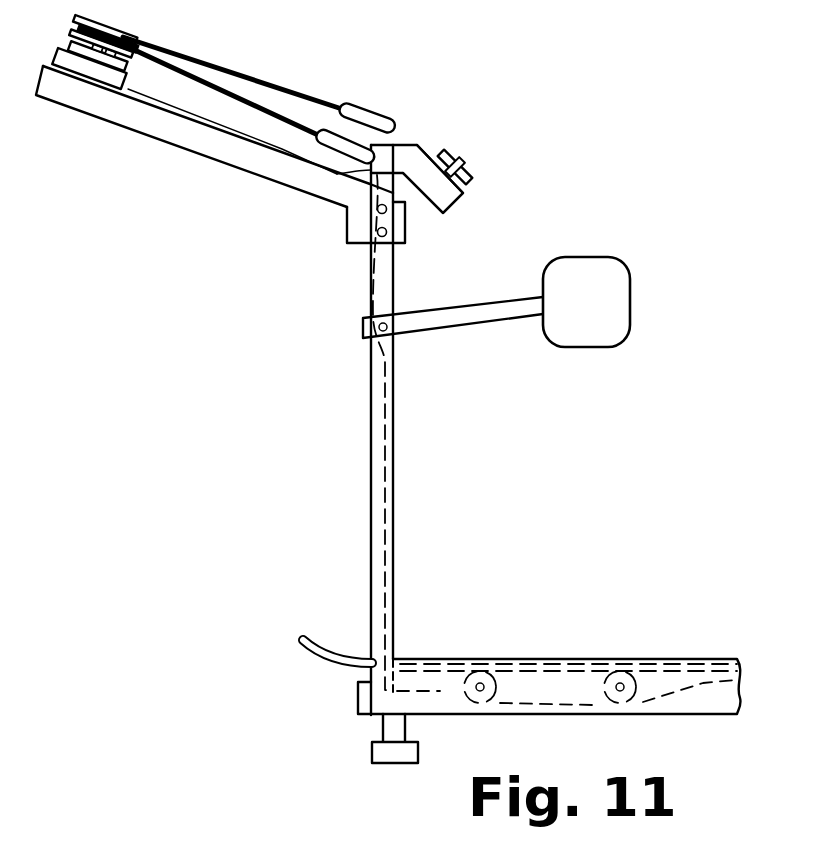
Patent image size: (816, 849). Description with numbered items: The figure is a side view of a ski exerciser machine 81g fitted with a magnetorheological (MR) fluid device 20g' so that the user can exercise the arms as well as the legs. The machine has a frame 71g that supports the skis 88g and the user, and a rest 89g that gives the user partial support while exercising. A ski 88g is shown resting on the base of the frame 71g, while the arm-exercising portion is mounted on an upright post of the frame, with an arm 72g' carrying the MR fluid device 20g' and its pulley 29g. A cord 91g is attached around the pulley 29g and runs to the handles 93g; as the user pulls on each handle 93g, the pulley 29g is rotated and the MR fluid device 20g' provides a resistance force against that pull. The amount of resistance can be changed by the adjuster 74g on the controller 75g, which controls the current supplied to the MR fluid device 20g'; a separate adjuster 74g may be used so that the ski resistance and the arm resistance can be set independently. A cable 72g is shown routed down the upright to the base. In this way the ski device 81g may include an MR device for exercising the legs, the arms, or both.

The MR fluid device 20g' is at (96, 131).
The pulley 29g is at (112, 18).
The frame 71g is at (393, 400).
The control cable 72g is at (554, 440).
The pivot arm 72g' is at (214, 161).
The adjuster 74g is at (461, 157).
The controller 75g is at (461, 203).
The ski machine 81g is at (568, 387).
The ski 88g is at (324, 650).
The rest 89g is at (629, 297).
The cord 91g is at (252, 79).
The handle 93g is at (380, 113).